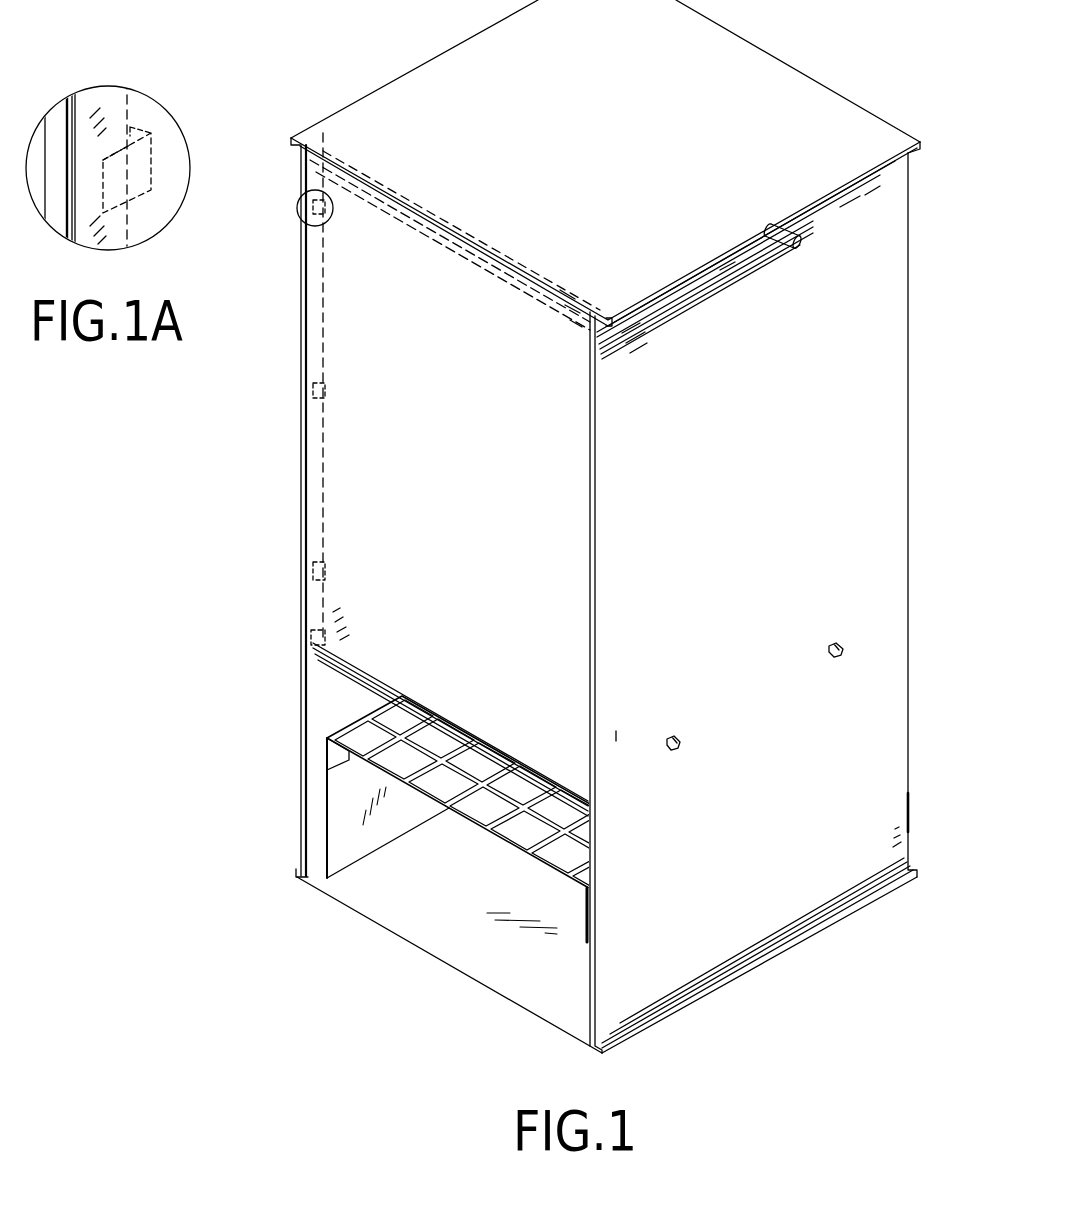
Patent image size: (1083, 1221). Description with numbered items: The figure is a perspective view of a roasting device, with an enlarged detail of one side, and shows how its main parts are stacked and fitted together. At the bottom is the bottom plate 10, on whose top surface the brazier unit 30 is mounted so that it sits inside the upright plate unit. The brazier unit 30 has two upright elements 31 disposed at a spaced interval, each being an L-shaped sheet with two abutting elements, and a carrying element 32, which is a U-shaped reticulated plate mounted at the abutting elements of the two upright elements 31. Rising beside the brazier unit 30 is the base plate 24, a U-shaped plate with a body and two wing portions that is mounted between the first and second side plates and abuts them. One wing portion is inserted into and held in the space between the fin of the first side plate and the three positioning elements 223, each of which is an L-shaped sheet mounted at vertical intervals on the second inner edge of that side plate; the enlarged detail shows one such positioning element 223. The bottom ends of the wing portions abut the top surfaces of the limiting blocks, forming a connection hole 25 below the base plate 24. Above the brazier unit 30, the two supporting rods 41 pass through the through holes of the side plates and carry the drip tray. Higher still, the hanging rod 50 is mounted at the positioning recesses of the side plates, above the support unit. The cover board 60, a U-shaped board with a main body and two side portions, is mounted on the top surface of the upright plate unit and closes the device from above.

In FIG. 1, the bottom plate 10 is at (473, 980).
In FIG. 1, the base plate 24 is at (355, 418).
In FIG. 1A, the positioning elements 223 is at (127, 185).
In FIG. 1, the connection hole 25 is at (332, 693).
In FIG. 1, the brazier unit 30 is at (392, 855).
In FIG. 1, the upright elements 31 is at (345, 790).
In FIG. 1, the carrying element 32 is at (510, 840).
In FIG. 1, the supporting rods 41 is at (843, 652).
In FIG. 1, the hanging rod 50 is at (800, 244).
In FIG. 1, the cover board 60 is at (740, 50).